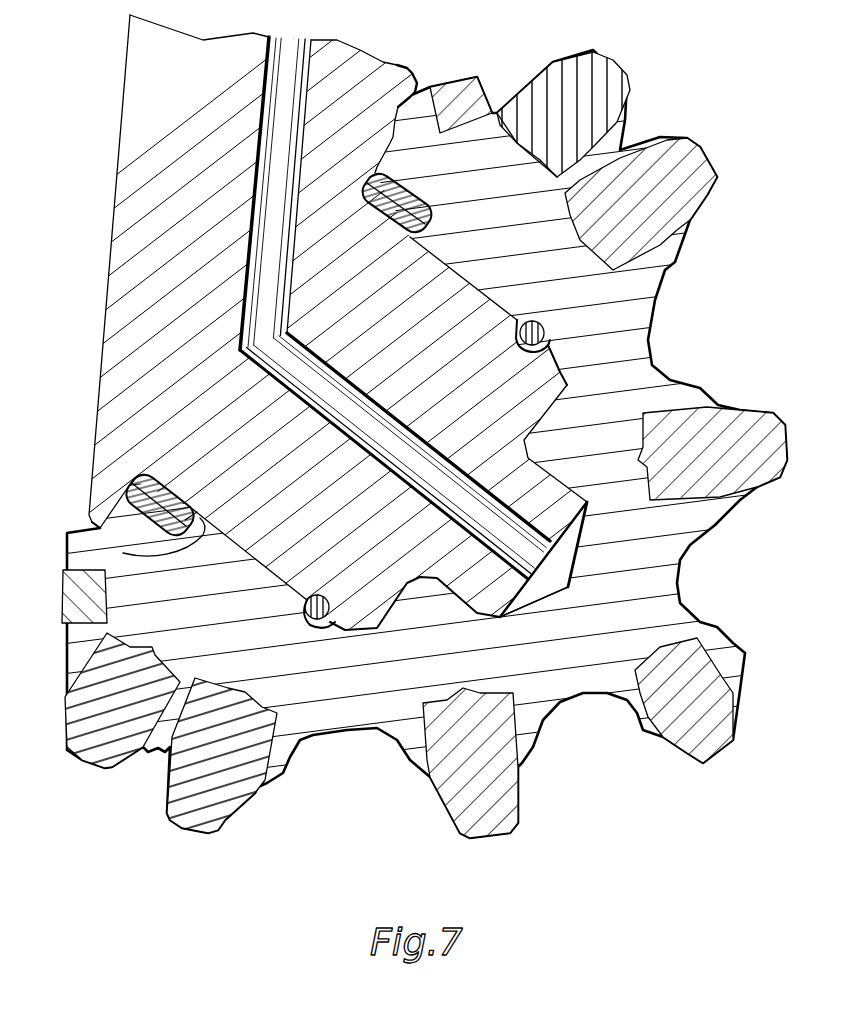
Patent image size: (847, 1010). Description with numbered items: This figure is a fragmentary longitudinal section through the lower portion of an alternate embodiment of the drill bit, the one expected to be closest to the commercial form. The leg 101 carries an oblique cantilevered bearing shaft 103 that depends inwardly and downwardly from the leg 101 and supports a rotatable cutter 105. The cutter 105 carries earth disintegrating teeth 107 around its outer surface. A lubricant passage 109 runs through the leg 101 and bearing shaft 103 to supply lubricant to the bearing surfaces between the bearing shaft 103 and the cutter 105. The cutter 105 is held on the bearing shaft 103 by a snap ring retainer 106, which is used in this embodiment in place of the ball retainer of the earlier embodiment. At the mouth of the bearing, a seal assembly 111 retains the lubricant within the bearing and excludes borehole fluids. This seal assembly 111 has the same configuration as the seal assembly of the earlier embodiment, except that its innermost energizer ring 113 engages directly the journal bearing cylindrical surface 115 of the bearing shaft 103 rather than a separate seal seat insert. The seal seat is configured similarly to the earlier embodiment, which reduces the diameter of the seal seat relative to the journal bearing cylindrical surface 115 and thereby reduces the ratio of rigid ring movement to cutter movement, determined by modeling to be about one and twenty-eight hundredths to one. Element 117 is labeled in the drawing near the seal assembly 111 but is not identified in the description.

The leg 101 is at (183, 236).
The bearing shaft 103 is at (270, 430).
The cutter 105 is at (382, 700).
The snap ring retainer 106 is at (305, 622).
The earth disintegrating teeth 107 is at (193, 795).
The lubricant passage 109 is at (283, 177).
The seal assembly 111 is at (135, 474).
The energizer ring 113 is at (163, 488).
The journal bearing cylindrical surface 115 is at (123, 553).
The pin 117 is at (197, 513).